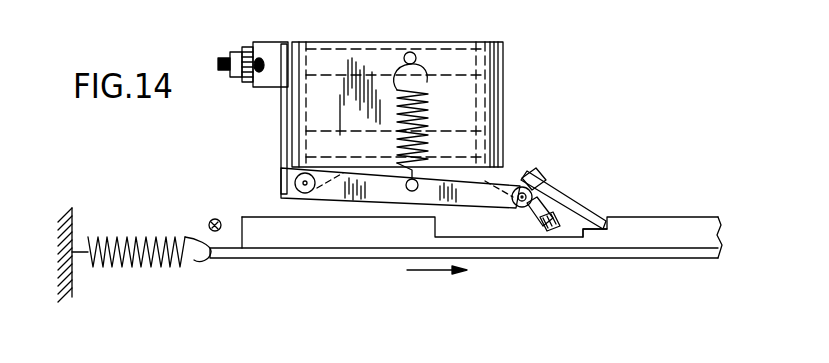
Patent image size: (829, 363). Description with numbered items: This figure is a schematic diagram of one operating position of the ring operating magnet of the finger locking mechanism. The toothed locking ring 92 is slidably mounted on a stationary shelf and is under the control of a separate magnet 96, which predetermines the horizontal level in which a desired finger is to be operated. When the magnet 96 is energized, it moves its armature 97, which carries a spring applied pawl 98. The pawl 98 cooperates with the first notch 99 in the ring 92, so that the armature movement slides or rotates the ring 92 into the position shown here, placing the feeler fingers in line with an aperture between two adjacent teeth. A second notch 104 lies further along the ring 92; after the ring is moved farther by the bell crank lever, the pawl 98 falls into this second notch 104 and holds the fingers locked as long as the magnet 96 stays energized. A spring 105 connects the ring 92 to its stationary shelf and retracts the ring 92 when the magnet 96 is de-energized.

The toothed locking ring 92 is at (640, 250).
The magnet 96 is at (320, 122).
The armature 97 is at (465, 201).
The spring applied pawl 98 is at (578, 203).
The first notch 99 is at (608, 217).
The second notch 104 is at (580, 237).
The spring 105 is at (137, 237).